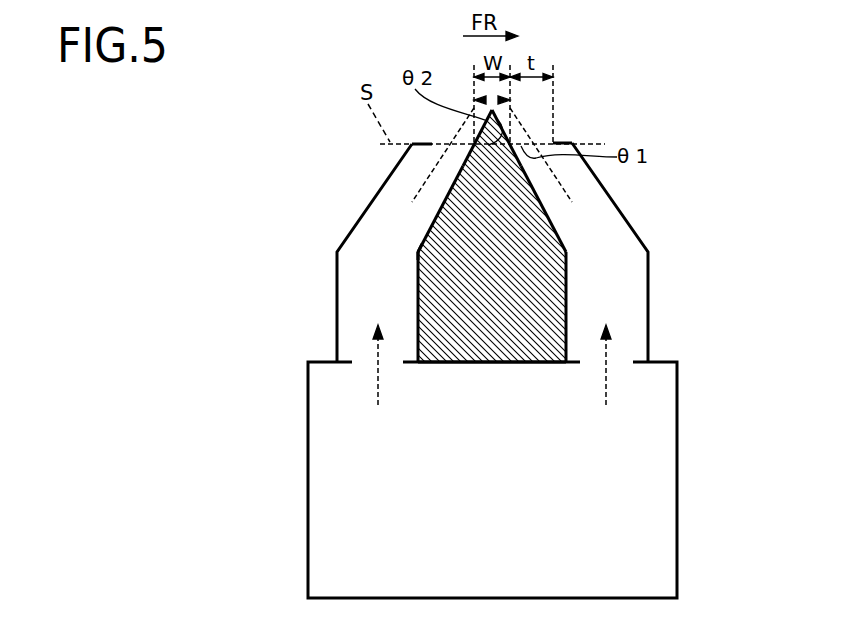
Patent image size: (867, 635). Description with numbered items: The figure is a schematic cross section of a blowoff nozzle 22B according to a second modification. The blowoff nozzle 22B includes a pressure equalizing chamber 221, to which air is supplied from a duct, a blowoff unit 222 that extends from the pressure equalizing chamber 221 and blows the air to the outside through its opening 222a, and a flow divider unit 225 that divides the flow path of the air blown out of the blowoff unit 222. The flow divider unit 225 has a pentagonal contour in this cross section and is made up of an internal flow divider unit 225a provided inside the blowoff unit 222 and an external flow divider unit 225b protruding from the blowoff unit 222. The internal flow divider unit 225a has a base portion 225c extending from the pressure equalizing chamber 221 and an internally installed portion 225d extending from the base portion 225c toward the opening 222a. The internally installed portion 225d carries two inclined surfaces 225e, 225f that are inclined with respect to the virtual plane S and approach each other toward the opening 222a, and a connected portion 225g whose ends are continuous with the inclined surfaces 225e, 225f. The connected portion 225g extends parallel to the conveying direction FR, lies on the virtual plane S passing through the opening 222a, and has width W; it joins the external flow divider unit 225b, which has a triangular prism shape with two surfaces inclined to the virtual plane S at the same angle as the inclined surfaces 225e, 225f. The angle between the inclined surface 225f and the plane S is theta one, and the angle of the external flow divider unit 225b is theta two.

The blowoff nozzle 22B is at (684, 302).
The pressure equalizing chamber 221 is at (655, 478).
The blowoff unit 222 is at (608, 235).
The opening 222a is at (552, 139).
The flow divider unit 225 is at (220, 148).
The internal flow divider unit 225a is at (436, 217).
The external flow divider unit 225b is at (483, 125).
The base portion 225c is at (432, 302).
The internally installed portion 225d is at (560, 238).
The inclined surface 225e is at (419, 240).
The inclined surface 225f is at (545, 213).
The connected portion 225g is at (531, 186).